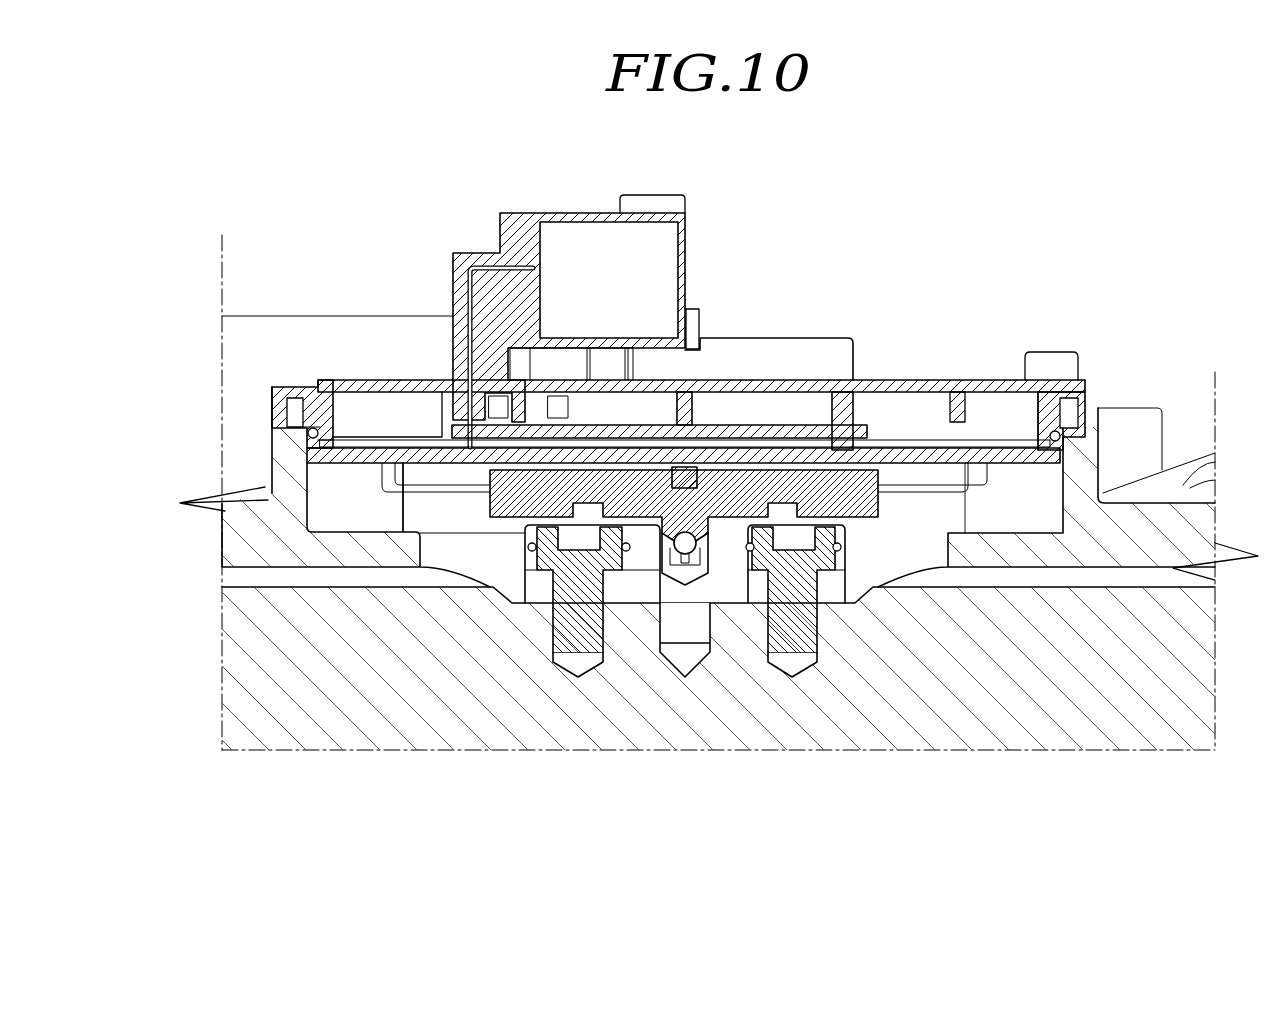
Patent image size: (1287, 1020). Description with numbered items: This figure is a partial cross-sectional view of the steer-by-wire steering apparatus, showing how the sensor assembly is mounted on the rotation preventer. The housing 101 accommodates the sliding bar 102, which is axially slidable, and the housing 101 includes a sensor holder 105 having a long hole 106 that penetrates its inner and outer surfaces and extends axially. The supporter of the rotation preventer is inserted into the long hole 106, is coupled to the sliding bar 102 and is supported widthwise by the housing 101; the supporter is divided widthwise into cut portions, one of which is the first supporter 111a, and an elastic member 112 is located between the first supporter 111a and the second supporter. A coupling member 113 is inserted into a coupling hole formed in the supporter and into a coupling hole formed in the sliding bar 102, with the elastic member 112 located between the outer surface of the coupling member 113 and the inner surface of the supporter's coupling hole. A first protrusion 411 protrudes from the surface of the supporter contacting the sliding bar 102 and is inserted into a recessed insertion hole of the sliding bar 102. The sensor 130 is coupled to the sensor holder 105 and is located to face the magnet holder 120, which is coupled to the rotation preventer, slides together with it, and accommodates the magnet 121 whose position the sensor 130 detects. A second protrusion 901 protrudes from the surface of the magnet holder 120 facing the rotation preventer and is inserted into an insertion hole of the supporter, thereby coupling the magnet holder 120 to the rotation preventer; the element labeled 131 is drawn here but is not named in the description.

The housing 101 is at (252, 538).
The sliding bar 102 is at (252, 665).
The sensor holder 105 is at (266, 449).
The long hole 106 is at (487, 556).
The first supporter 111a is at (835, 592).
The elastic member 112 is at (845, 548).
The coupling member 113 is at (792, 638).
The magnet holder 120 is at (780, 480).
The magnet 121 is at (700, 480).
The sensor 130 is at (454, 284).
The plate 131 is at (910, 490).
The first protrusion 411 is at (685, 622).
The second protrusion 901 is at (657, 548).